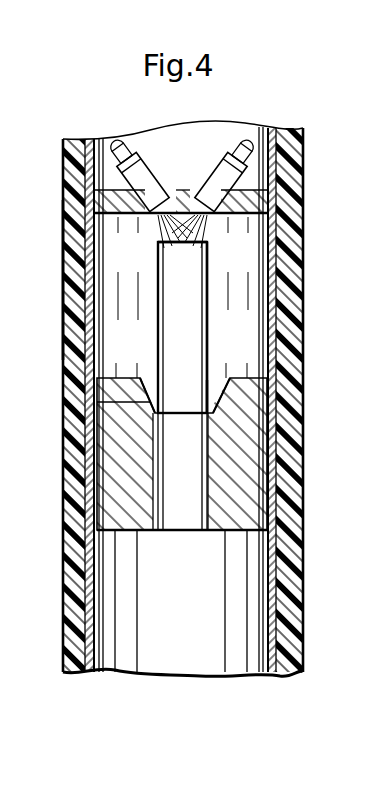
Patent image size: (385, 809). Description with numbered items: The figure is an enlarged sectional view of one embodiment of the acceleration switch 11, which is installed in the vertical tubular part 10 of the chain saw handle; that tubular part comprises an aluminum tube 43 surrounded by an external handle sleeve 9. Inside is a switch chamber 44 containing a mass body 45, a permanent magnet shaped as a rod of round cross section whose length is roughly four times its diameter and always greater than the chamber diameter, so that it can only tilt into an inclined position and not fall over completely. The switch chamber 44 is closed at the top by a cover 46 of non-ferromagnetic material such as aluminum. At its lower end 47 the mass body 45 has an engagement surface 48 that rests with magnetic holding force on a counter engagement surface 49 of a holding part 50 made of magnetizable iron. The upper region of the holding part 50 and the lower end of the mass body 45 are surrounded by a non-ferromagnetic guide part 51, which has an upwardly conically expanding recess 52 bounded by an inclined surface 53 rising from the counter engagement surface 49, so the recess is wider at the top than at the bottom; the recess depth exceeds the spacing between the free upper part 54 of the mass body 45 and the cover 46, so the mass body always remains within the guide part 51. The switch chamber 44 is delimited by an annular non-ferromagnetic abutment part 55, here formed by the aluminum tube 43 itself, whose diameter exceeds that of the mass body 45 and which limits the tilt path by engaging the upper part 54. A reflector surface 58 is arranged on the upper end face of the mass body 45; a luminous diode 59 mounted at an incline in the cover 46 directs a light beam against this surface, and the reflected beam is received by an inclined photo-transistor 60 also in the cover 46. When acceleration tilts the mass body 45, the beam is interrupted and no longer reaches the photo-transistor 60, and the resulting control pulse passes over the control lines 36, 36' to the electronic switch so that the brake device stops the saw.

The external handle sleeve 9 is at (73, 280).
The vertical tubular part 10 is at (277, 130).
The acceleration switch 11 is at (331, 133).
The control lines 36 is at (126, 156).
The control lines 36' is at (240, 149).
The aluminum tube 43 is at (90, 311).
The switch chamber 44 is at (237, 288).
The mass body 45 is at (173, 340).
The cover 46 is at (247, 200).
The lower end 47 is at (213, 402).
The engagement surface 48 is at (153, 435).
The counter engagement surface 49 is at (157, 402).
The holding part 50 is at (160, 492).
The guide part 51 is at (123, 412).
The recess 52 is at (211, 395).
The inclined surface 53 is at (216, 382).
The upper part 54 is at (200, 257).
The abutment part 55 is at (272, 313).
The reflector surface 58 is at (158, 246).
The luminous diode 59 is at (135, 173).
The photo-transistor 60 is at (220, 180).